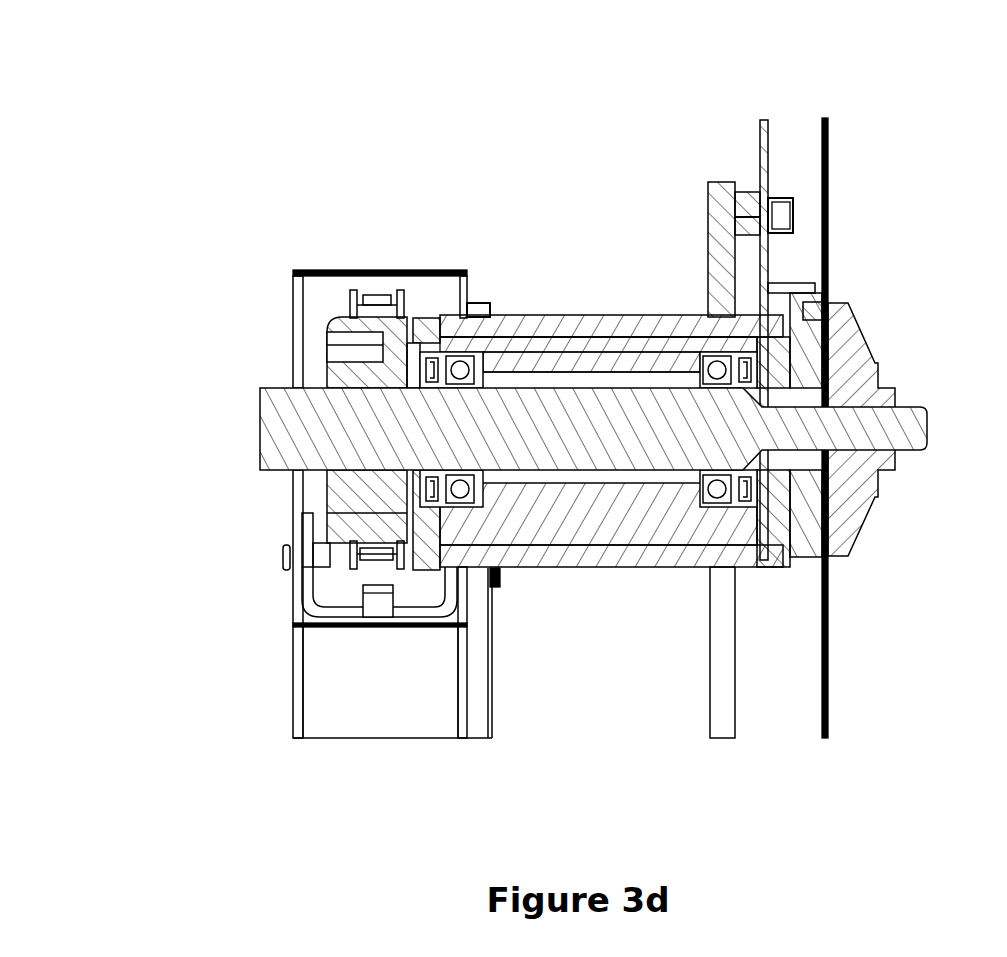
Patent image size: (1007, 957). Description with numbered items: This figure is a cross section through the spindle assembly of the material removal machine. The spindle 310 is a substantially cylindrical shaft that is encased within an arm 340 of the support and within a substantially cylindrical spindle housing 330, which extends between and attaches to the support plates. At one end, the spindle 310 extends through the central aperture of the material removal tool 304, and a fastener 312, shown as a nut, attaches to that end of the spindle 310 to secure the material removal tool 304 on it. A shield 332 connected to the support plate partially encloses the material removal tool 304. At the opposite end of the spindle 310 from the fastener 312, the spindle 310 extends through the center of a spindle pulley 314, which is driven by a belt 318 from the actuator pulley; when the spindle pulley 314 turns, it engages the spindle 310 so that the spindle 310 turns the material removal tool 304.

The material removal tool 304 is at (823, 125).
The spindle 310 is at (282, 402).
The fastener 312 is at (897, 392).
The spindle pulley 314 is at (325, 372).
The belt 318 is at (388, 300).
The spindle housing 330 is at (663, 318).
The shield 332 is at (760, 140).
The arm 340 is at (295, 270).